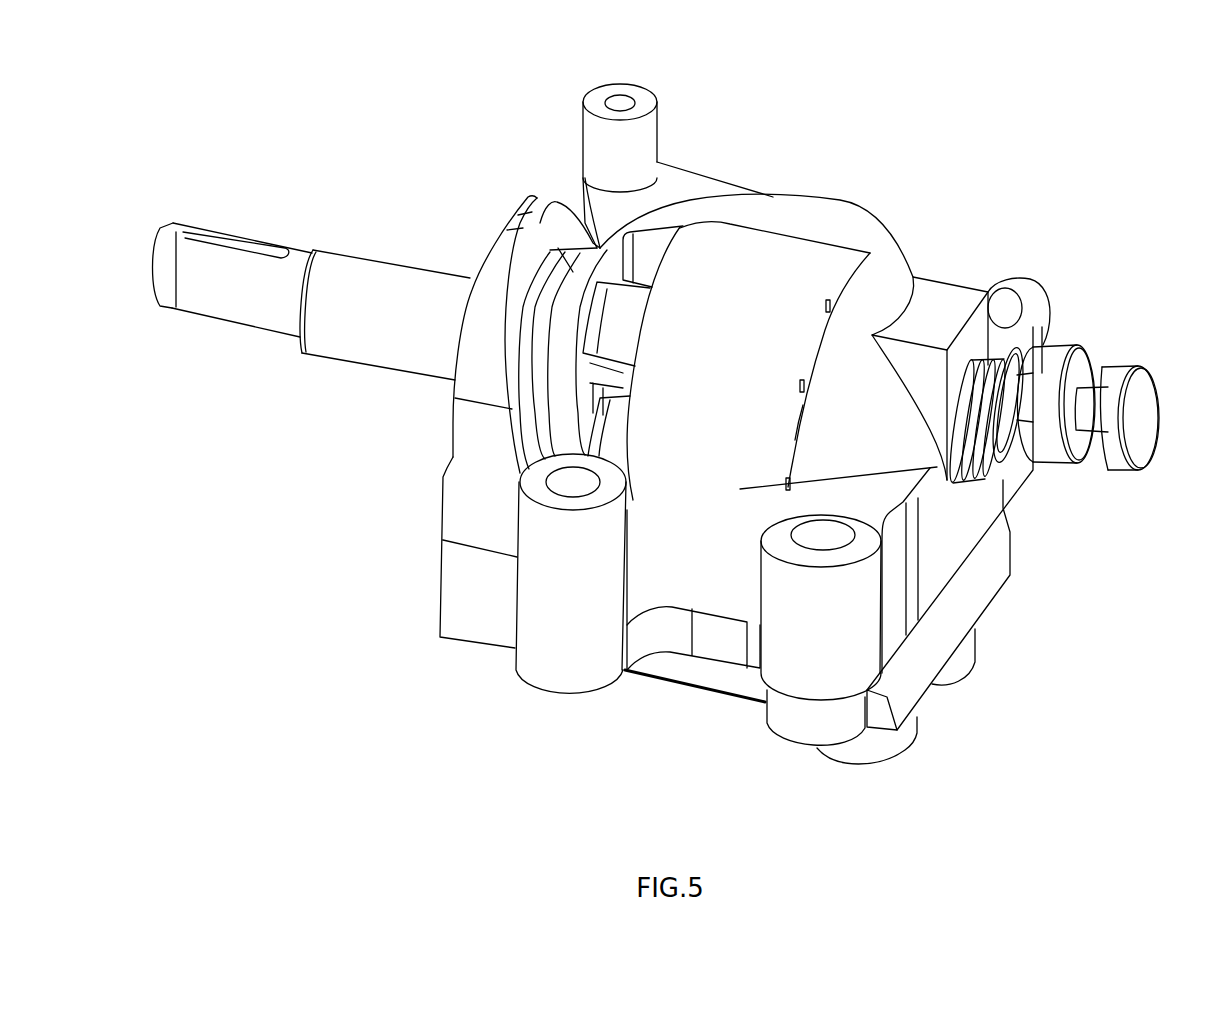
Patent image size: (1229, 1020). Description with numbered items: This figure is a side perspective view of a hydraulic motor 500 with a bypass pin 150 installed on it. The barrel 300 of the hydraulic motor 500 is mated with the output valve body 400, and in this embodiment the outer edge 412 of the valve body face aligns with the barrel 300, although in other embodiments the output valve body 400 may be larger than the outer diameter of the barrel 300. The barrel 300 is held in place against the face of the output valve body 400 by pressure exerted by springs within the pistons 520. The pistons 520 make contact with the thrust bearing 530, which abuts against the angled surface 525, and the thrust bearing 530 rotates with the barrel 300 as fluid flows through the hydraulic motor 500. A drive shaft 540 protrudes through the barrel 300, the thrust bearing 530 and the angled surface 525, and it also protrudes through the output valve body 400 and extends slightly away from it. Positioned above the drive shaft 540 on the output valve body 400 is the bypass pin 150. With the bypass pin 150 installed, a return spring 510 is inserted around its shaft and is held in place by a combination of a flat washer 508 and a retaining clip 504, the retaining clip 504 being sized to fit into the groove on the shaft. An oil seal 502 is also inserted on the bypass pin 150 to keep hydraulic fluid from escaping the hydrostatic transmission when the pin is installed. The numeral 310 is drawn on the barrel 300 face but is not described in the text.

The hydraulic motor 500 is at (1084, 106).
The drive shaft 540 is at (347, 263).
The angled surface 525 is at (533, 223).
The thrust bearing 530 is at (532, 253).
The barrel 300 is at (810, 257).
The slots 310 is at (786, 484).
The outer edge 412 is at (798, 420).
The pistons 520 is at (615, 422).
The output valve body 400 is at (945, 302).
The retaining clip 504 is at (1033, 473).
The flat washer 508 is at (1017, 365).
The return spring 510 is at (1017, 318).
The oil seal 502 is at (1085, 373).
The bypass pin 150 is at (1150, 405).